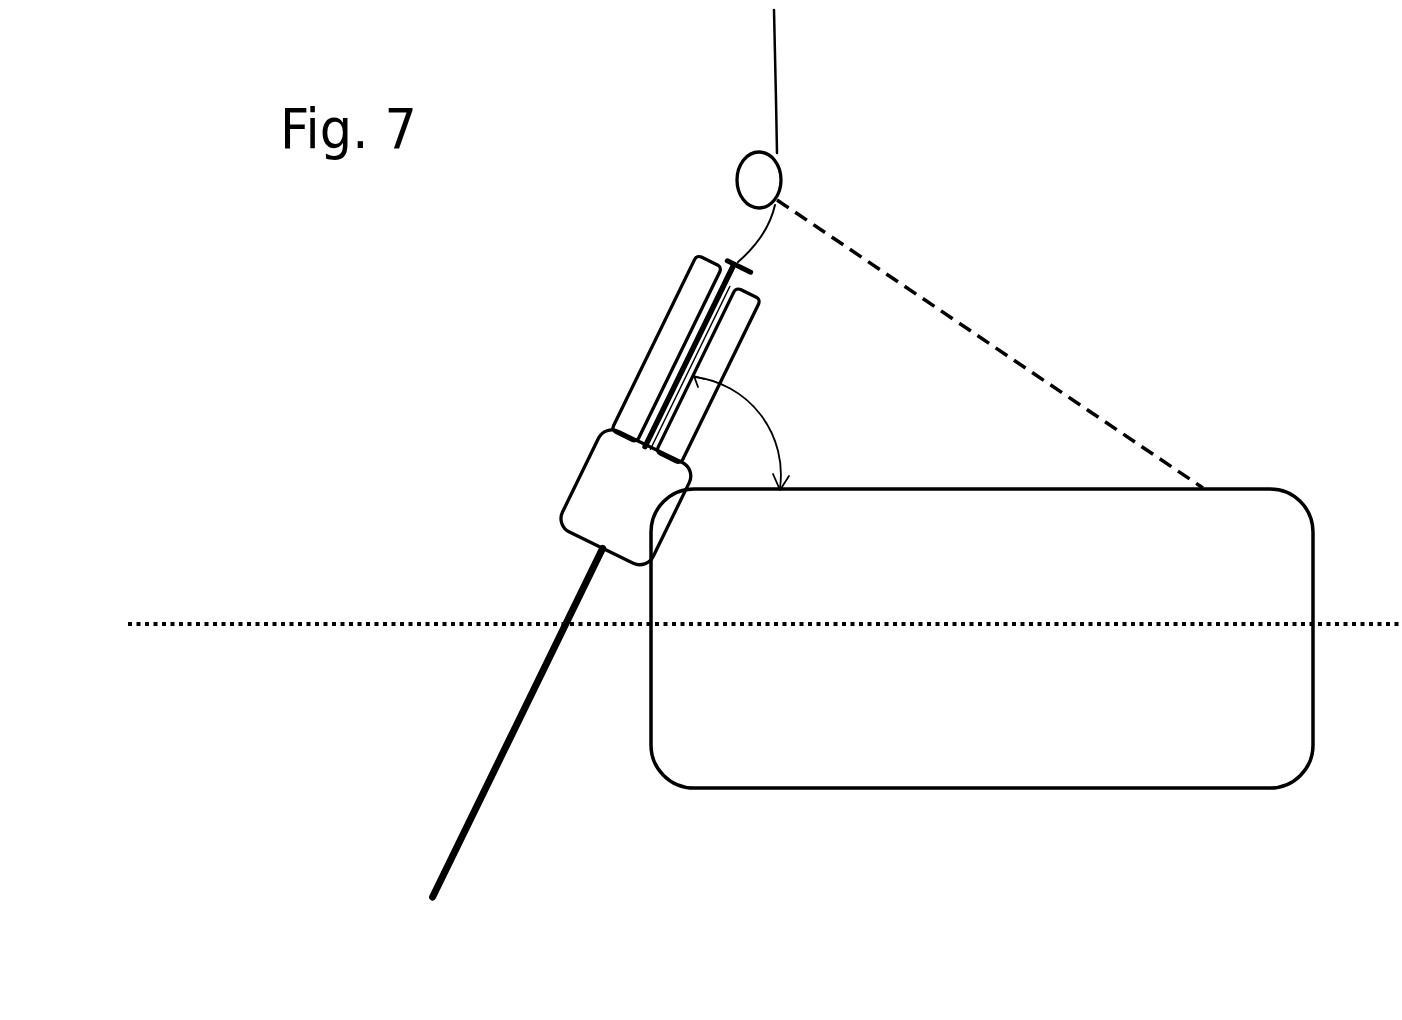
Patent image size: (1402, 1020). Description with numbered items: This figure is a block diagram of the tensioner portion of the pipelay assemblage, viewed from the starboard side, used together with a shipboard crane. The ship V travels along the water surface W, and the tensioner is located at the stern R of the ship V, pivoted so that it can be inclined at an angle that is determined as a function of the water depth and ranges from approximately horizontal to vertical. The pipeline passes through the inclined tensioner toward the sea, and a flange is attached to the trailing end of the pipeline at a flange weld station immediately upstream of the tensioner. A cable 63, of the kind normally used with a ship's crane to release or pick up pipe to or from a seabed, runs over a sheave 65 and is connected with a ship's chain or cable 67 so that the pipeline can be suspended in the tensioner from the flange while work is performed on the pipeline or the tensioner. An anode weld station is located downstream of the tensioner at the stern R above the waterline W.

The cable 63 is at (778, 98).
The sheave 65 is at (743, 160).
The ship's chain or cable 67 is at (1068, 392).
The water surface W is at (243, 623).
The stern R is at (655, 735).
The ship V is at (1018, 788).